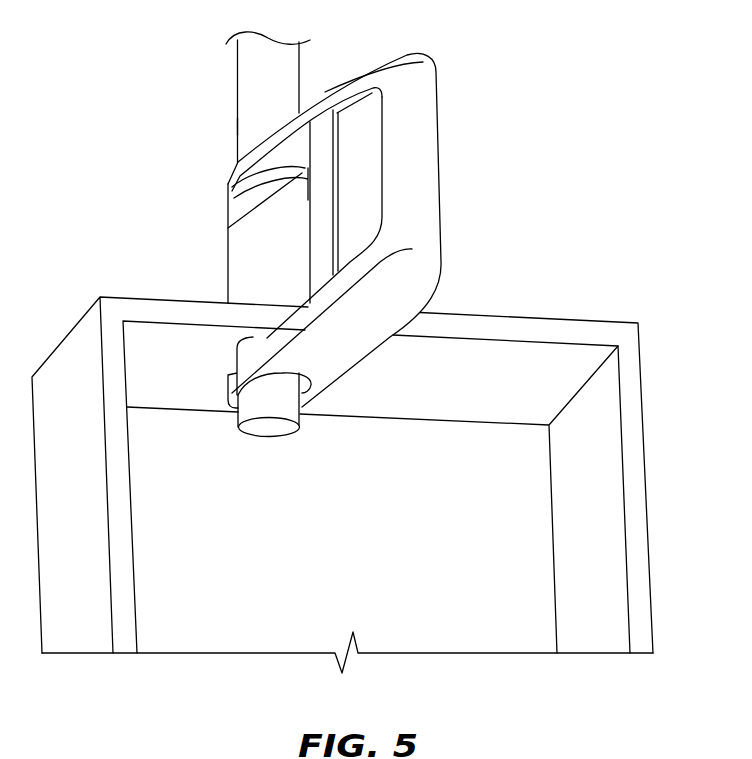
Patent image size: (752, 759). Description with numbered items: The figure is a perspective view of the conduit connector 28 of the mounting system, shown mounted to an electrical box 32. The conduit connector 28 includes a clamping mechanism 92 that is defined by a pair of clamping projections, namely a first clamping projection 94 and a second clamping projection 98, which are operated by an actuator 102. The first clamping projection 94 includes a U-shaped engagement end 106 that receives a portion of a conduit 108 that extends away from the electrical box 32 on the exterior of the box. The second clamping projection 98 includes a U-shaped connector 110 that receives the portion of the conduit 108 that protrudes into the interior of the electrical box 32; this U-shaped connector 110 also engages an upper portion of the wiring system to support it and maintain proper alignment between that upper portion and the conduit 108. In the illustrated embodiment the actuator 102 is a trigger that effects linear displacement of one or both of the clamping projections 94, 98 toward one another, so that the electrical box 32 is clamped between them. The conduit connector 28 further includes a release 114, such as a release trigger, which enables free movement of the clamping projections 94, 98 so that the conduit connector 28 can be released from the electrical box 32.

The conduit connector 28 is at (462, 130).
The electrical box 32 is at (648, 292).
The clamping mechanism 92 is at (214, 81).
The first clamping projection 94 is at (343, 90).
The second clamping projection 98 is at (333, 357).
The actuator 102 is at (229, 230).
The U-shaped engagement end 106 is at (236, 168).
The conduit 108 is at (236, 126).
The U-shaped connector 110 is at (253, 365).
The release 114 is at (322, 232).